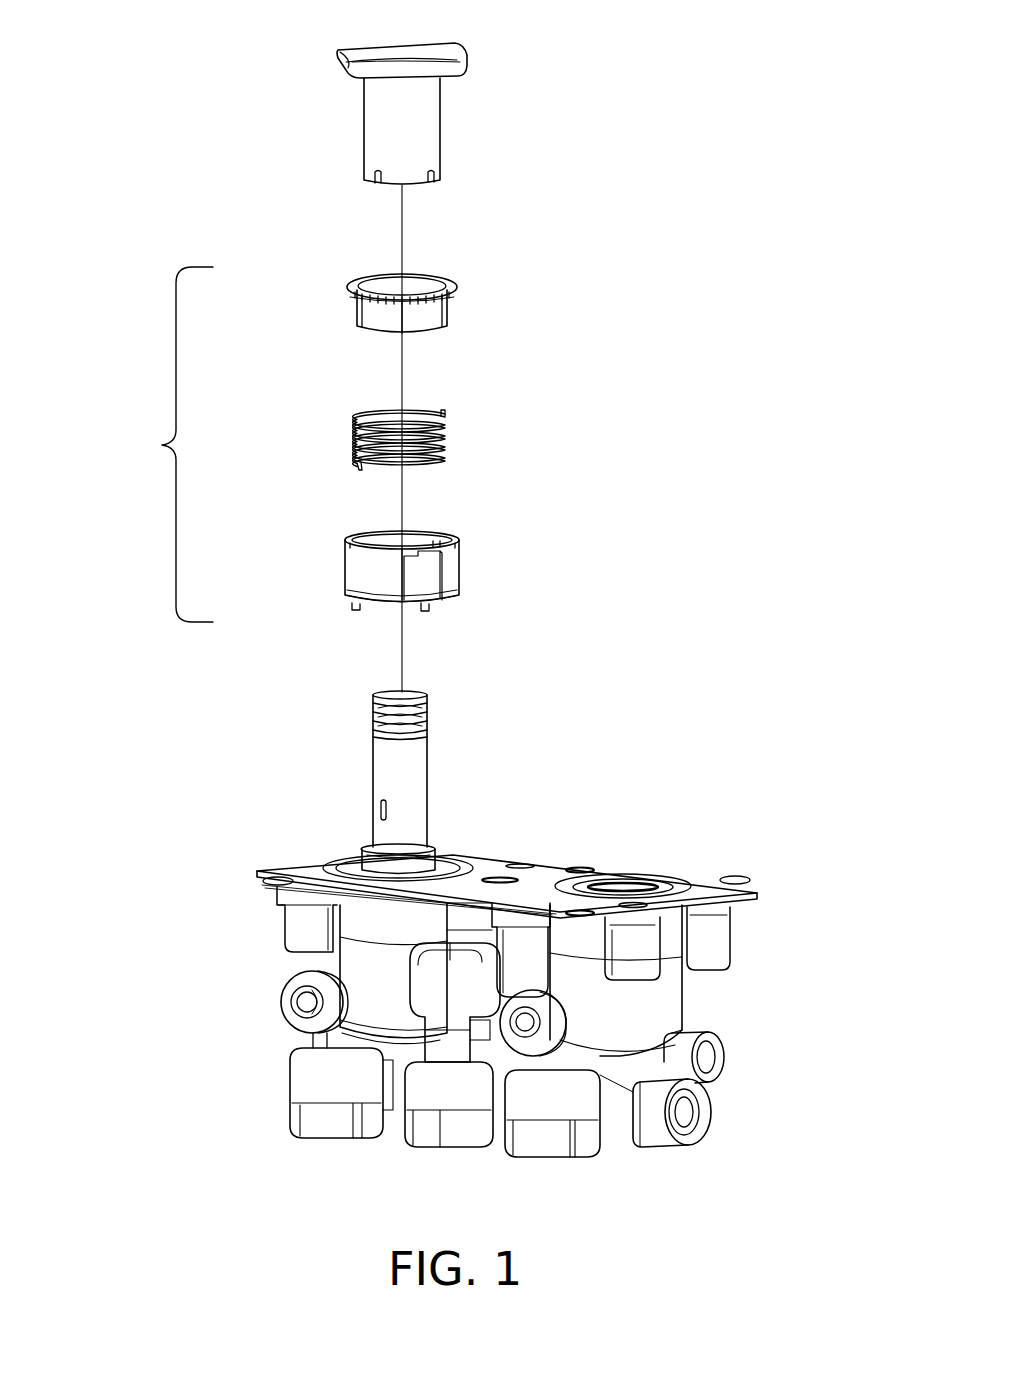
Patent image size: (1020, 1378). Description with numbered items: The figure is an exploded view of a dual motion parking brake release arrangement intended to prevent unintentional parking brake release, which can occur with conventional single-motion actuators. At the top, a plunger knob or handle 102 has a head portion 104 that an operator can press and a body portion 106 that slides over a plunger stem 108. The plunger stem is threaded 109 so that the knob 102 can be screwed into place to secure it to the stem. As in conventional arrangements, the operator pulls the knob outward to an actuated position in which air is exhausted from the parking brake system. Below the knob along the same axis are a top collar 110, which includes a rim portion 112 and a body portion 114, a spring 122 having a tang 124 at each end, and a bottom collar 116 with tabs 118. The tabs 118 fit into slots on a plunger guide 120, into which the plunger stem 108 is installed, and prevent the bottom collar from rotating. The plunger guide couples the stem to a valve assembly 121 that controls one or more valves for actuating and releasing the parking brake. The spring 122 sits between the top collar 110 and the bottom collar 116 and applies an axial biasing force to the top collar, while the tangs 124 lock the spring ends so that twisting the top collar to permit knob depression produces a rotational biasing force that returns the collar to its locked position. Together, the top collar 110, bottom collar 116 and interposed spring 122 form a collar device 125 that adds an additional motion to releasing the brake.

The plunger knob 102 is at (432, 98).
The head portion 104 is at (395, 42).
The body portion 106 is at (365, 135).
The plunger stem 108 is at (387, 762).
The threaded portion 109 is at (428, 700).
The top collar 110 is at (408, 294).
The rim portion 112 is at (350, 283).
The body portion 114 is at (363, 315).
The bottom collar 116 is at (376, 578).
The tabs 118 is at (357, 608).
The plunger guide 120 is at (344, 850).
The valve assembly 121 is at (588, 848).
The spring 122 is at (391, 437).
The tang 124 is at (443, 410).
The collar device 125 is at (160, 445).